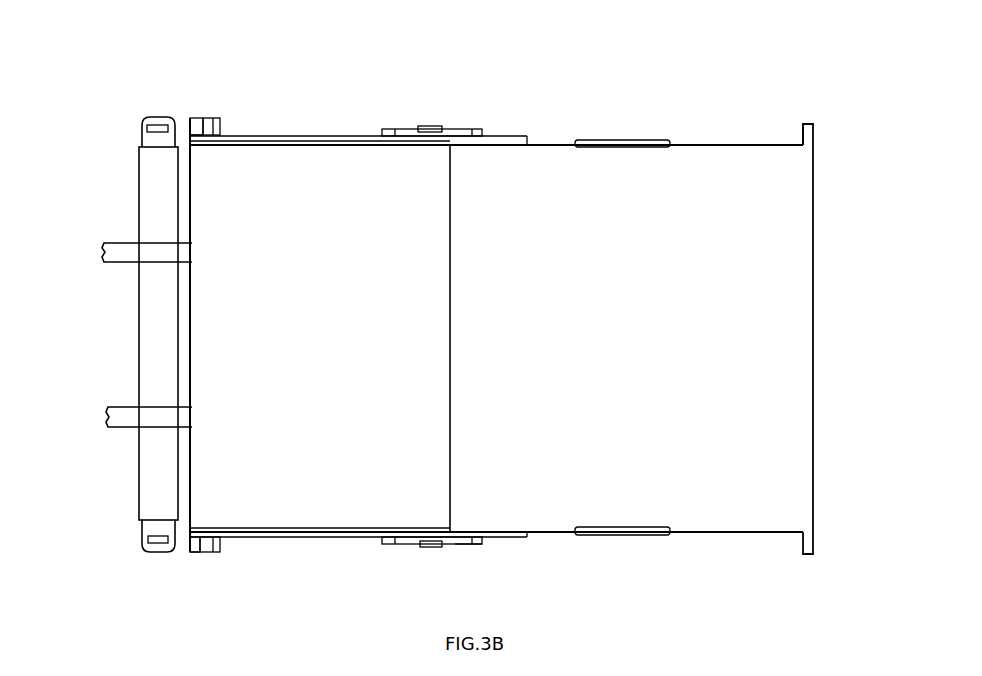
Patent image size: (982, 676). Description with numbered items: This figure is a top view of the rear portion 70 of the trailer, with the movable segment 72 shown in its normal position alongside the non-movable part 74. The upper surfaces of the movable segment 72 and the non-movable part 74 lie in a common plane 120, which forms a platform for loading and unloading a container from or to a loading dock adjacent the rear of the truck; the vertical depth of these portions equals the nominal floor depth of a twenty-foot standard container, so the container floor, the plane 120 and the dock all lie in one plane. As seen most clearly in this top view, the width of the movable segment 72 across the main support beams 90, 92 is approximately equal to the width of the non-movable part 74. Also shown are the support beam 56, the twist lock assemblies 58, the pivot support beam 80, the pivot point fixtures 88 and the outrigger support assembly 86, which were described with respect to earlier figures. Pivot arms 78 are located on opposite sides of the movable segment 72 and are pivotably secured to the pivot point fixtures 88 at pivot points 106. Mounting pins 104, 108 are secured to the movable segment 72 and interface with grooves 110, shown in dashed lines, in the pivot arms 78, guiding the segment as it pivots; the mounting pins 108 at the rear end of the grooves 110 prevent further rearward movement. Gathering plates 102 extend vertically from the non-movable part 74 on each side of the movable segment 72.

The rear portion 70 is at (826, 284).
The movable segment 72 is at (320, 332).
The non-movable part 74 is at (645, 332).
The pivot arms 78 is at (276, 139).
The pivot support beam 80 is at (195, 127).
The outrigger support assembly 86 is at (463, 544).
The pivot point fixtures 88 is at (209, 124).
The main support beam 90 is at (117, 412).
The main support beam 92 is at (112, 253).
The support beam 56 is at (145, 189).
The twist lock assemblies 58 is at (145, 118).
The gathering plates 102 is at (638, 142).
The mounting pins 104 is at (232, 138).
The pivot points 106 is at (202, 144).
The mounting pins 108 is at (249, 538).
The grooves 110 is at (492, 137).
The plane 120 is at (545, 170).